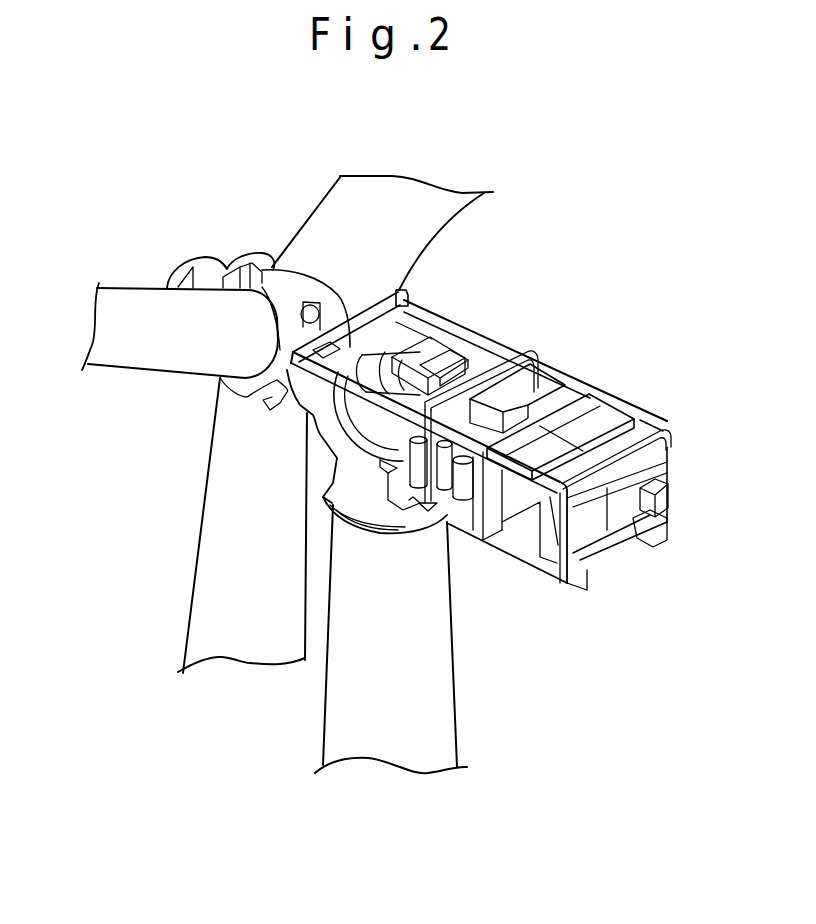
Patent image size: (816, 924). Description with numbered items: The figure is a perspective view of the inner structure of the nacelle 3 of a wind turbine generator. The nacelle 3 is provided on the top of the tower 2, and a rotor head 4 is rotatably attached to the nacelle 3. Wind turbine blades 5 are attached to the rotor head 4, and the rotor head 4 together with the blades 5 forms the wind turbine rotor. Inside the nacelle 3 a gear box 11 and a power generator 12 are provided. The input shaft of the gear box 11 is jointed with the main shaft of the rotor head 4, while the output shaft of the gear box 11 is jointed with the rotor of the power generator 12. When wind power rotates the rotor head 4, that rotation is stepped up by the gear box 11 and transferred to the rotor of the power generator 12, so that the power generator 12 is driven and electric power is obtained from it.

The tower 2 is at (443, 667).
The nacelle 3 is at (538, 295).
The rotor head 4 is at (210, 247).
The wind turbine blades 5 is at (125, 290).
The gear box 11 is at (368, 424).
The power generator 12 is at (540, 397).